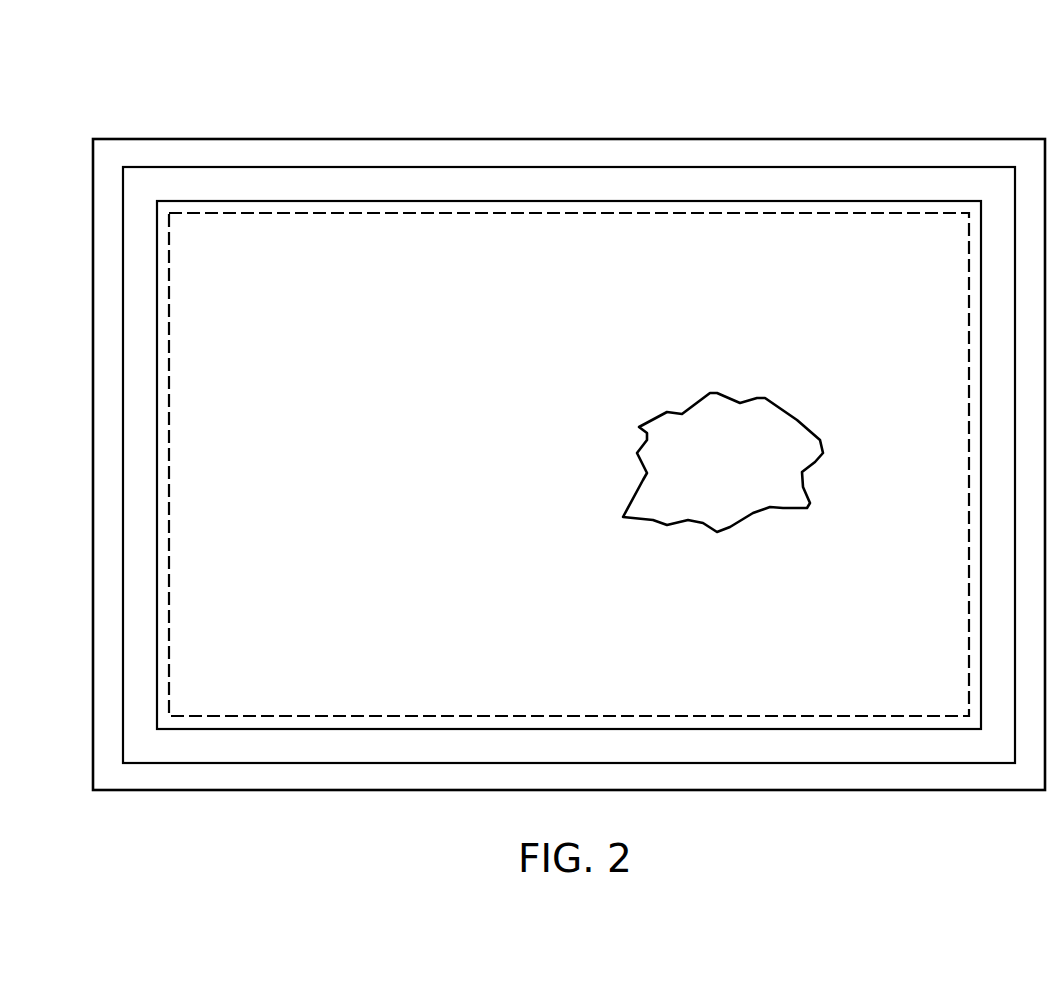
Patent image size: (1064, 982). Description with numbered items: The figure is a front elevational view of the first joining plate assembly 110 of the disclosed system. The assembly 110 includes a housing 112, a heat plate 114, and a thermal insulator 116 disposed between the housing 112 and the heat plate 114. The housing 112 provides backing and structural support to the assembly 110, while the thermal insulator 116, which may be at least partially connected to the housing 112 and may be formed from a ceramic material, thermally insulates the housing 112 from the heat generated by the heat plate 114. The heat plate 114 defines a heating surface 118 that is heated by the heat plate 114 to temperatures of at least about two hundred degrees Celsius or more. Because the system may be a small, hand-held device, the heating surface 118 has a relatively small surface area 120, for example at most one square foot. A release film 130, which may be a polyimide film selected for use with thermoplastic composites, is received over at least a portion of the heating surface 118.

The first joining plate assembly 110 is at (940, 112).
The housing 112 is at (655, 139).
The heat plate 114 is at (393, 201).
The thermal insulator 116 is at (547, 167).
The heating surface 118 is at (418, 482).
The surface area 120 is at (733, 213).
The release film 130 is at (767, 398).